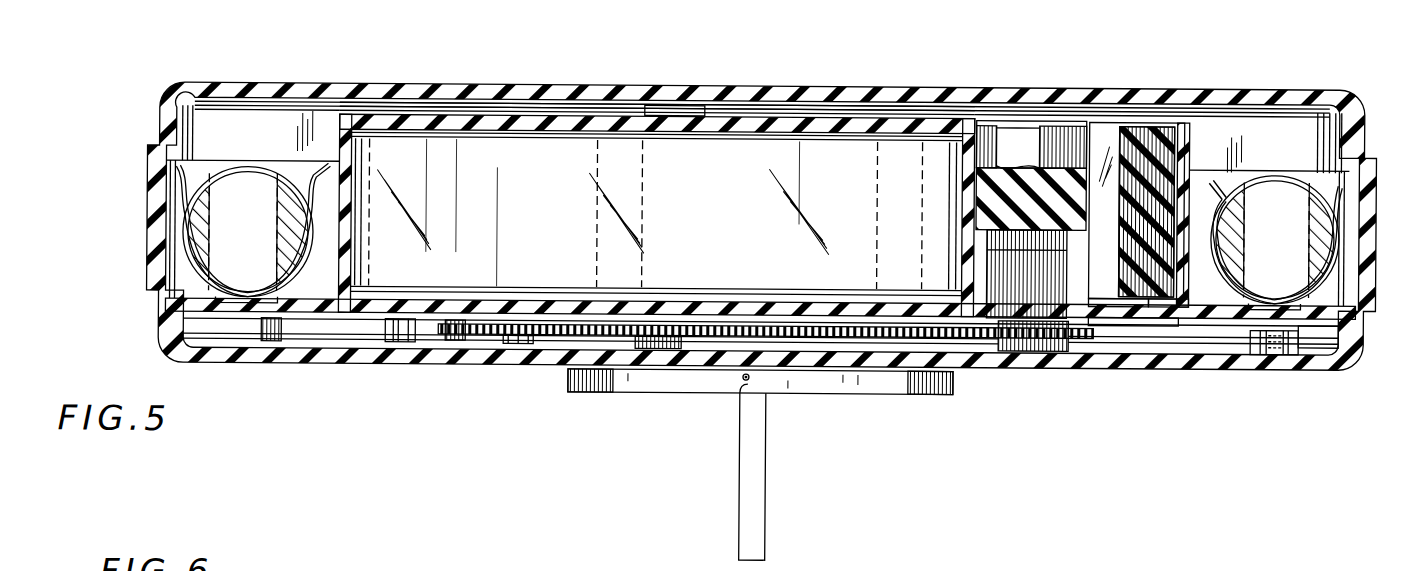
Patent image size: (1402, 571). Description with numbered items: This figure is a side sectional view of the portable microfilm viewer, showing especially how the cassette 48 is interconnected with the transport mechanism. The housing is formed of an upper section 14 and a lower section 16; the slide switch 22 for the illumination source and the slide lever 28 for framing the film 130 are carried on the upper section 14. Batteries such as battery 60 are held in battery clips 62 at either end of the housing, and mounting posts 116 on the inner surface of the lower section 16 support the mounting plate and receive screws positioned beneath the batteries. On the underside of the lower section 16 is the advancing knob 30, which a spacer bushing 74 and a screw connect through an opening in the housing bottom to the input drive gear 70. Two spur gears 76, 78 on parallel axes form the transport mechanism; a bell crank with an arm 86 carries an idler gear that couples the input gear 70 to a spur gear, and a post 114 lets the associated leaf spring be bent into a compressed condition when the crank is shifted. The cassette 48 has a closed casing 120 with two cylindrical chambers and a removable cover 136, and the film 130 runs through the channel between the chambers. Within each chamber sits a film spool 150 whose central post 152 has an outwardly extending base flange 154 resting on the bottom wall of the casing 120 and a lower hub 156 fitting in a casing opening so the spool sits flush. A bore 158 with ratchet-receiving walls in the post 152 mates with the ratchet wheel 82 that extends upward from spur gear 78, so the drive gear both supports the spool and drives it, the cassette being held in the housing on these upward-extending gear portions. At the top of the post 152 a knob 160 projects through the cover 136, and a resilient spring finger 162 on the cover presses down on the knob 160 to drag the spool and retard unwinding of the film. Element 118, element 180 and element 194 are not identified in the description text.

In FIG. 5, the upper section 14 is at (488, 82).
In FIG. 5, the lower section 16 is at (345, 353).
In FIG. 5, the cassette 48 is at (707, 120).
In FIG. 5, the battery 60 is at (203, 243).
In FIG. 5, the battery clips 62 is at (177, 197).
In FIG. 5, the input drive gear 70 is at (920, 372).
In FIG. 5, the advancing knob 30 is at (812, 388).
In FIG. 5, the spacer bushing 74 is at (683, 362).
In FIG. 5, the spur gear 76 is at (520, 346).
In FIG. 5, the spur gear 78 is at (1057, 358).
In FIG. 5, the ratchet wheel 82 is at (1010, 277).
In FIG. 5, the bell crank arm 86 is at (473, 349).
In FIG. 5, the post 114 is at (392, 333).
In FIG. 5, the mounting posts 116 is at (277, 327).
In FIG. 5, the retainer 118 is at (1302, 366).
In FIG. 5, the closed casing 120 is at (1135, 300).
In FIG. 5, the film 130 is at (1160, 130).
In FIG. 5, the removable cover 136 is at (1127, 123).
In FIG. 5, the film spool 150 is at (1016, 142).
In FIG. 5, the central post 152 is at (990, 142).
In FIG. 5, the base flange 154 is at (1150, 290).
In FIG. 5, the lower hub 156 is at (1107, 298).
In FIG. 5, the bore 158 is at (987, 234).
In FIG. 5, the knob 160 is at (1067, 110).
In FIG. 5, the resilient spring finger 162 is at (1050, 114).
In FIG. 6, the stem 194 is at (626, 559).
In FIG. 6, the slide lever 28 is at (874, 563).
In FIG. 6, the post 180 is at (1004, 565).
In FIG. 6, the slide switch 22 is at (1172, 565).